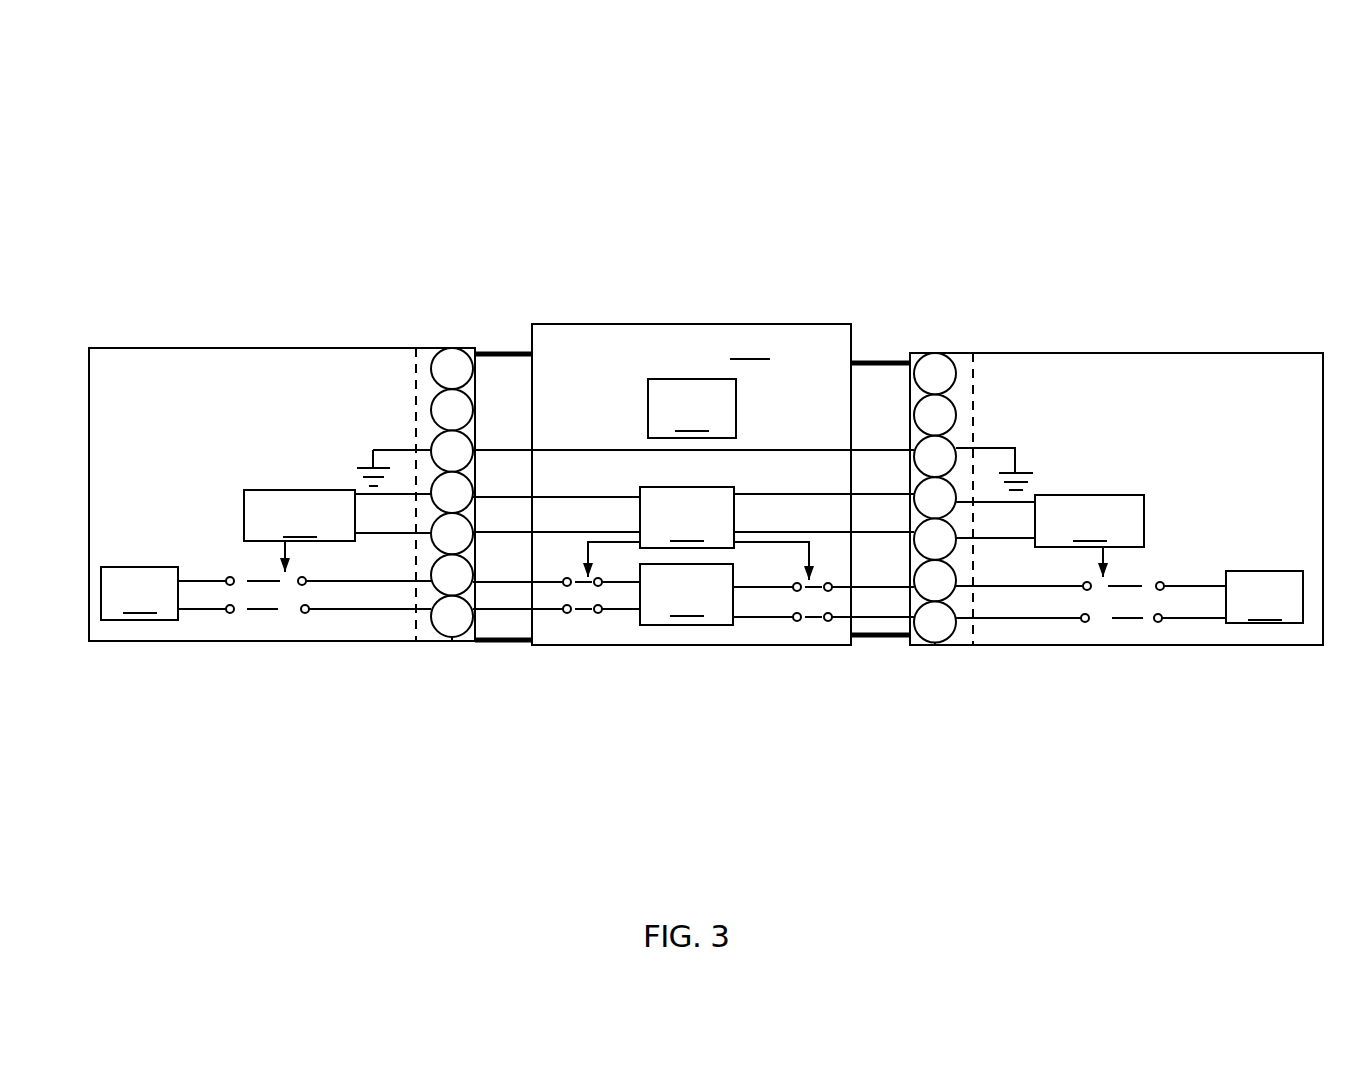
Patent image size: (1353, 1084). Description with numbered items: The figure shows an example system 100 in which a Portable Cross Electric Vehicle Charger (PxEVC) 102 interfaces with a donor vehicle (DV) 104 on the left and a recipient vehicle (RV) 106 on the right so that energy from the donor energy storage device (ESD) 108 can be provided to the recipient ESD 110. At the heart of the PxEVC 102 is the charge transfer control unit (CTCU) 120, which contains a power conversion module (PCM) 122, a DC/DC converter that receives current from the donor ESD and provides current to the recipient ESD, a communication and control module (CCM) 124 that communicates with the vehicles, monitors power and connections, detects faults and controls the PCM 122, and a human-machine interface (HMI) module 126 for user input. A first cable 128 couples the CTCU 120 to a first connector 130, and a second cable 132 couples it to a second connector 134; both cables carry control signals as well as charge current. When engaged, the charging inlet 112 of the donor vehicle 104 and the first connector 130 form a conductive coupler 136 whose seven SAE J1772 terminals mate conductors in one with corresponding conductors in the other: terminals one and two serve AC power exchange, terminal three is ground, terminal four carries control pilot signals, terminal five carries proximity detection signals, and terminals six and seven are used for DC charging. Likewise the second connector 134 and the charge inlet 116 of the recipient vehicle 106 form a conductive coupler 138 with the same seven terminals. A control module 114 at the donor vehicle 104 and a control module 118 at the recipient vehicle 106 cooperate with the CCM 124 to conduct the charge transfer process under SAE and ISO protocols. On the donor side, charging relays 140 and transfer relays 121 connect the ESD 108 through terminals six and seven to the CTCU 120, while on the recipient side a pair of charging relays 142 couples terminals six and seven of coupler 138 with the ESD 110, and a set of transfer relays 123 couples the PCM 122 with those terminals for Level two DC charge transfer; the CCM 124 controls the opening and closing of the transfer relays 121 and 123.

The system 100 is at (878, 127).
The Portable Cross Electric Vehicle Charger (PxEVC) 102 is at (708, 222).
The donor vehicle 104 is at (282, 494).
The recipient vehicle 106 is at (1116, 499).
The donor energy storage device 108 is at (163, 593).
The recipient energy storage device 110 is at (1232, 597).
The charging inlet 112 is at (432, 642).
The control module 114 is at (337, 531).
The charge inlet 116 is at (963, 647).
The control module 118 is at (1050, 536).
The charge transfer control unit 120 is at (691, 484).
The transfer relays 121 is at (585, 616).
The power conversion module 122 is at (686, 594).
The transfer relays 123 is at (795, 633).
The communication and control module 124 is at (693, 533).
The human-machine interface module 126 is at (692, 408).
The first cable 128 is at (497, 350).
The first connector 130 is at (458, 642).
The second cable 132 is at (892, 358).
The second connector 134 is at (920, 647).
The conductive coupler 136 is at (450, 340).
The conductive coupler 138 is at (934, 352).
The charging relays 140 is at (263, 626).
The charging relays 142 is at (1127, 628).